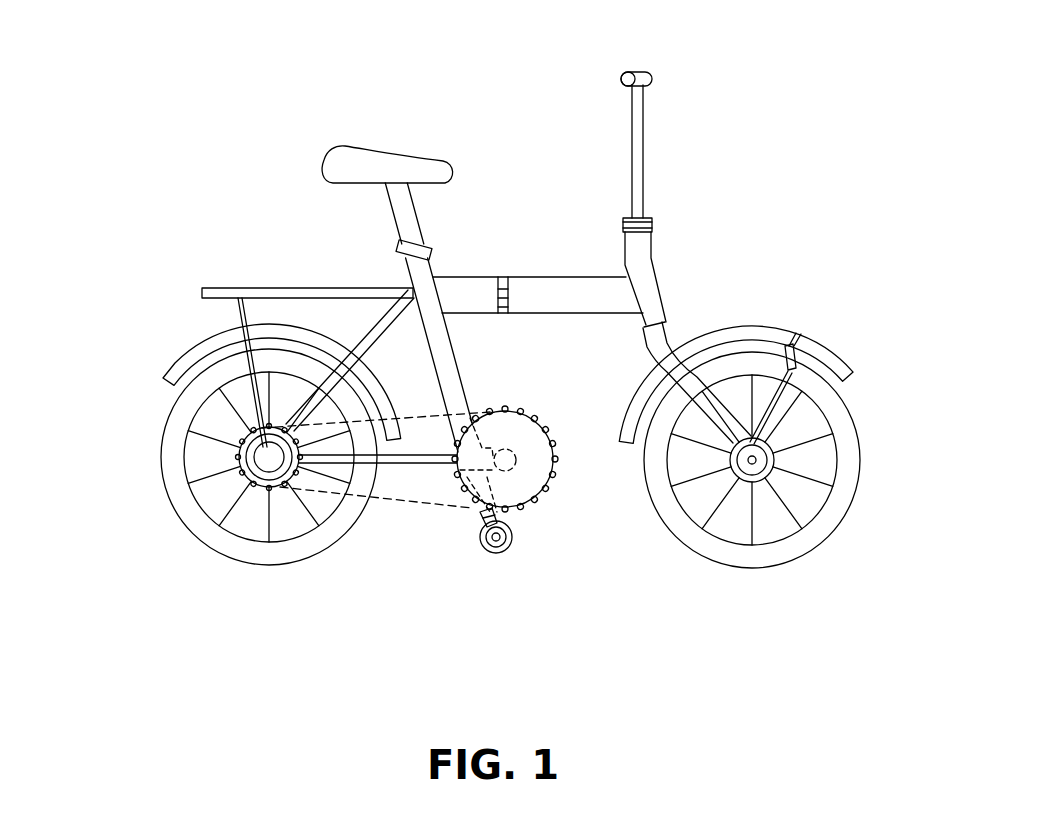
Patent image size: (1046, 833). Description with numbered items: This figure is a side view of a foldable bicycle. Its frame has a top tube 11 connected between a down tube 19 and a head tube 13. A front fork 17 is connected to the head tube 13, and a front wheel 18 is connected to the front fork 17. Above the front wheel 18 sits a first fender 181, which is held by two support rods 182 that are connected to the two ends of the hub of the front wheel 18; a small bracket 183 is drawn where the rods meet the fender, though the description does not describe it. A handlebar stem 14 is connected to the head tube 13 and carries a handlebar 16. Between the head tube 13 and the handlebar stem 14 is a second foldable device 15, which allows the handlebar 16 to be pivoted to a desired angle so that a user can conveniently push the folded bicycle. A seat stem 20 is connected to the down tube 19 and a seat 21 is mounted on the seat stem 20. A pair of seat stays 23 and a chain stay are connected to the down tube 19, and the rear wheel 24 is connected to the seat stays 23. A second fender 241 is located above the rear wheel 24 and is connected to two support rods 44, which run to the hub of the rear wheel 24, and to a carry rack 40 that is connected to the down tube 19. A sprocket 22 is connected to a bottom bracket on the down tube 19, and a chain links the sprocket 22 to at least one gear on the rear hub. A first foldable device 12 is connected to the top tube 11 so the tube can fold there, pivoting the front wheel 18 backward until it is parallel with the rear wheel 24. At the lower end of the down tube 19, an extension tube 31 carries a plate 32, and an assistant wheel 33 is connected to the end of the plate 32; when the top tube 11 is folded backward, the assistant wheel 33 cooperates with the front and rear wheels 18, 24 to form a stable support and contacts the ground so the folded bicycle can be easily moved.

The top tube 11 is at (572, 283).
The first foldable device 12 is at (503, 277).
The head tube 13 is at (643, 281).
The handlebar stem 14 is at (642, 141).
The second foldable device 15 is at (653, 220).
The handlebar 16 is at (642, 72).
The front fork 17 is at (688, 380).
The front wheel 18 is at (852, 460).
The first fender 181 is at (823, 352).
The support rods 182 is at (805, 378).
The fender bracket 183 is at (796, 359).
The down tube 19 is at (440, 353).
The seat stem 20 is at (402, 218).
The seat 21 is at (399, 165).
The sprocket 22 is at (497, 413).
The seat stay 23 is at (389, 333).
The rear wheel 24 is at (173, 475).
The second fender 241 is at (188, 362).
The extension tube 31 is at (487, 487).
The plate 32 is at (495, 513).
The assistant wheel 33 is at (498, 552).
The carry rack 40 is at (269, 284).
The support rods 44 is at (242, 315).